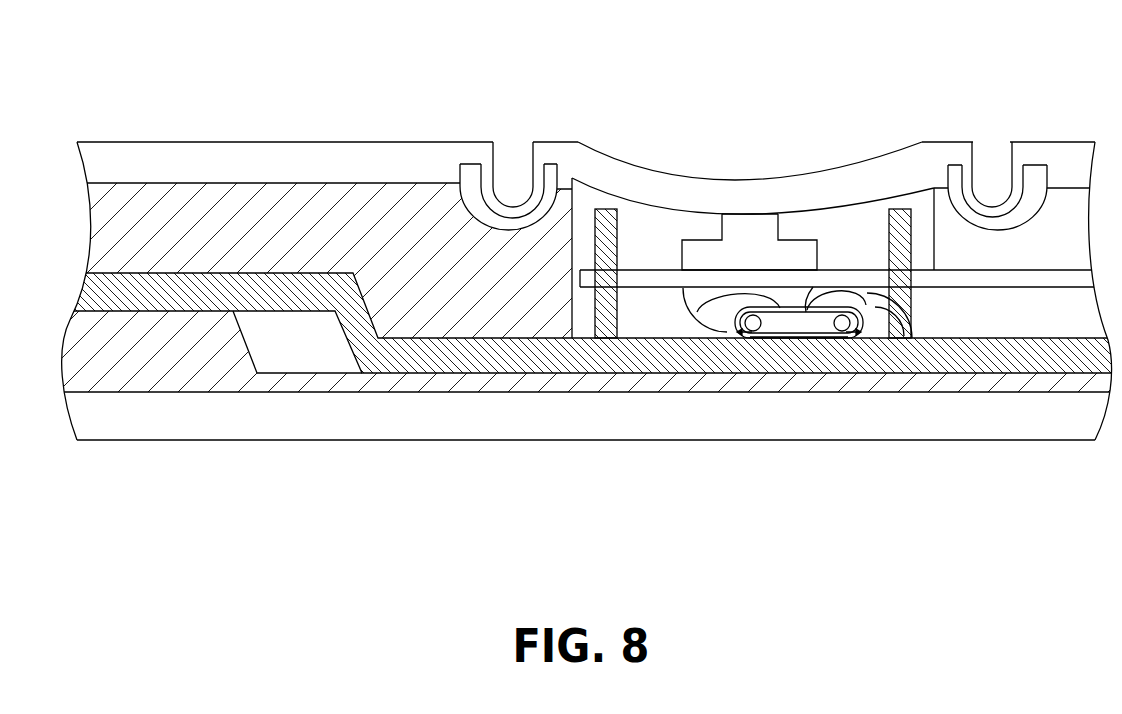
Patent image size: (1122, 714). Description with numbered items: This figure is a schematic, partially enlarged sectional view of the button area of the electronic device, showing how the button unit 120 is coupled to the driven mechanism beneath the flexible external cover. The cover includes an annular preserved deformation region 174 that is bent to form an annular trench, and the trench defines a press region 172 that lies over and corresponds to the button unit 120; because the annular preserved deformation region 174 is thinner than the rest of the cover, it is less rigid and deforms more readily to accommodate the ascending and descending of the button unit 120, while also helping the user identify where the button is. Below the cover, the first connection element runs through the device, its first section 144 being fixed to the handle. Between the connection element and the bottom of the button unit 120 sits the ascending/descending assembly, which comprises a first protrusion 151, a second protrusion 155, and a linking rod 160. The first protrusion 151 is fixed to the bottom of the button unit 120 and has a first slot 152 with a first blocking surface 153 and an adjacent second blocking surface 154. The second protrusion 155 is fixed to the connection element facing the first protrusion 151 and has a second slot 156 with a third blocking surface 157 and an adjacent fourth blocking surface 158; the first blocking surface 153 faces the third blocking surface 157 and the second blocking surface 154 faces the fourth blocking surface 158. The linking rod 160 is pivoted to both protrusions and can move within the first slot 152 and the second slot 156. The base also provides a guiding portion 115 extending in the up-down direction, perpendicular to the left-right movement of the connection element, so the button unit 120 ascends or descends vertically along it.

The annular preserved deformation region 174 is at (515, 152).
The press region 172 is at (647, 183).
The button unit 120 is at (748, 233).
The first section 144 is at (470, 360).
The guiding portion 115 is at (607, 327).
The first protrusion 151 is at (706, 294).
The first slot 152 is at (785, 325).
The first blocking surface 153 is at (723, 330).
The second blocking surface 154 is at (743, 333).
The second protrusion 155 is at (885, 330).
The second slot 156 is at (855, 335).
The third blocking surface 157 is at (833, 338).
The fourth blocking surface 158 is at (905, 335).
The linking rod 160 is at (808, 338).